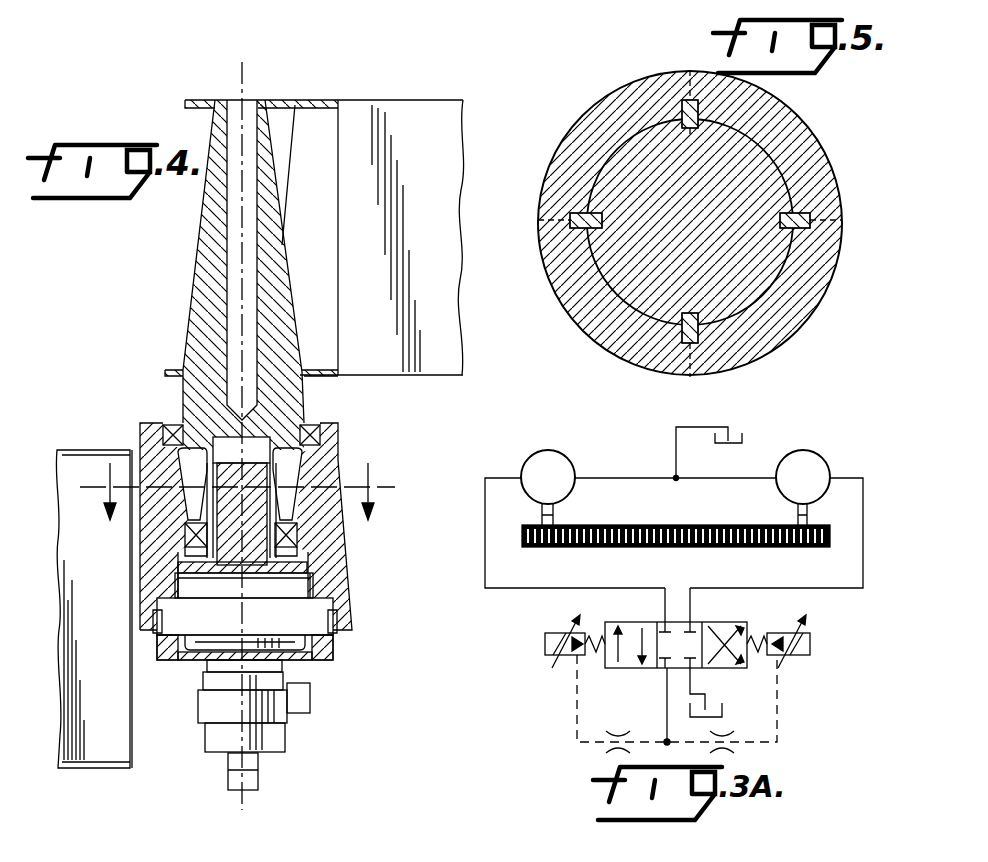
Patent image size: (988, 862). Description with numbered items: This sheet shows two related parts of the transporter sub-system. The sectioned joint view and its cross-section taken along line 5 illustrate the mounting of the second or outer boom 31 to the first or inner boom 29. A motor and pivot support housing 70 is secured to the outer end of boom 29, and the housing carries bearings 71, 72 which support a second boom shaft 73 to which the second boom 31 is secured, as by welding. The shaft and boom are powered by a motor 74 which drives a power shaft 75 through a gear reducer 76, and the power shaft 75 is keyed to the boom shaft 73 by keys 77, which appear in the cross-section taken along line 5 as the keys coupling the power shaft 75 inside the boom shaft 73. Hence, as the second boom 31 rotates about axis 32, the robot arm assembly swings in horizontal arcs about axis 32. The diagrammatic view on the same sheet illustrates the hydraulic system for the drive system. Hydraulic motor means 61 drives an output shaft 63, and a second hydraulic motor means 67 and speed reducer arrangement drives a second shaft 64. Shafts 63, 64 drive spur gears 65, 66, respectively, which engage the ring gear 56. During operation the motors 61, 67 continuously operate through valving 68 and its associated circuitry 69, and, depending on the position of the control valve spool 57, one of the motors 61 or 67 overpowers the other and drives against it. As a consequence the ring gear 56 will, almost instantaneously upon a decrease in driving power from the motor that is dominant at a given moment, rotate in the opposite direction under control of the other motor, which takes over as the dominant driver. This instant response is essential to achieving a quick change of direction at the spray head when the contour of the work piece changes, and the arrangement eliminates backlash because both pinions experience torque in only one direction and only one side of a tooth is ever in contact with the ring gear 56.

In FIG. 4, the first or inner boom 29 is at (75, 600).
In FIG. 4, the second or outer boom 31 is at (462, 140).
In FIG. 4, the axis 32 is at (243, 82).
In FIG. 4, the second boom shaft 73 is at (205, 262).
In FIG. 5, the second boom shaft 73 is at (795, 320).
In FIG. 4, the bearing 71 is at (170, 422).
In FIG. 4, the power shaft 75 is at (300, 424).
In FIG. 5, the power shaft 75 is at (763, 163).
In FIG. 4, the keys 77 is at (275, 478).
In FIG. 5, the keys 77 is at (683, 102).
In FIG. 4, the bearing 72 is at (190, 527).
In FIG. 4, the motor and pivot support housing 70 is at (350, 617).
In FIG. 4, the gear reducer 76 is at (322, 640).
In FIG. 4, the motor 74 is at (205, 708).
In FIG. 4, the line 5— 5 is at (240, 491).
In FIG. 3A, the ring gear 56 is at (688, 524).
In FIG. 3A, the control valve spool 57 is at (656, 672).
In FIG. 3A, the hydraulic motor means 61 is at (808, 452).
In FIG. 3A, the output shaft 63 is at (798, 514).
In FIG. 3A, the second shaft 64 is at (556, 514).
In FIG. 3A, the spur gear 65 is at (793, 548).
In FIG. 3A, the spur gear 66 is at (556, 548).
In FIG. 3A, the second hydraulic motor means 67 is at (556, 452).
In FIG. 3A, the valving 68 is at (722, 620).
In FIG. 3A, the circuitry 69 is at (514, 590).